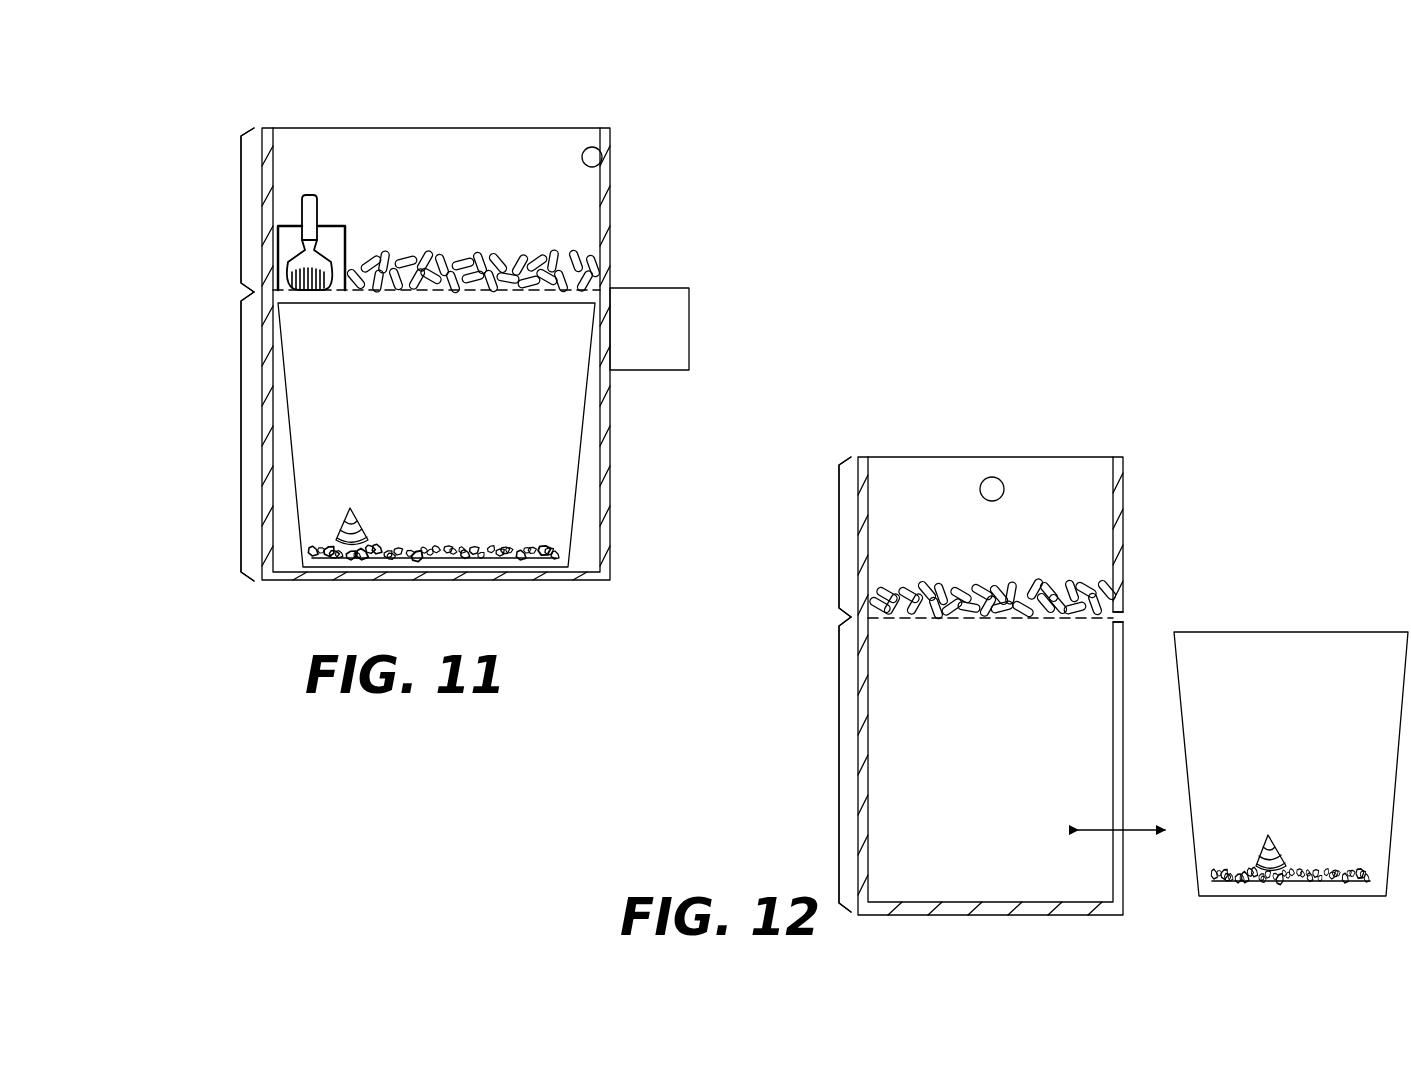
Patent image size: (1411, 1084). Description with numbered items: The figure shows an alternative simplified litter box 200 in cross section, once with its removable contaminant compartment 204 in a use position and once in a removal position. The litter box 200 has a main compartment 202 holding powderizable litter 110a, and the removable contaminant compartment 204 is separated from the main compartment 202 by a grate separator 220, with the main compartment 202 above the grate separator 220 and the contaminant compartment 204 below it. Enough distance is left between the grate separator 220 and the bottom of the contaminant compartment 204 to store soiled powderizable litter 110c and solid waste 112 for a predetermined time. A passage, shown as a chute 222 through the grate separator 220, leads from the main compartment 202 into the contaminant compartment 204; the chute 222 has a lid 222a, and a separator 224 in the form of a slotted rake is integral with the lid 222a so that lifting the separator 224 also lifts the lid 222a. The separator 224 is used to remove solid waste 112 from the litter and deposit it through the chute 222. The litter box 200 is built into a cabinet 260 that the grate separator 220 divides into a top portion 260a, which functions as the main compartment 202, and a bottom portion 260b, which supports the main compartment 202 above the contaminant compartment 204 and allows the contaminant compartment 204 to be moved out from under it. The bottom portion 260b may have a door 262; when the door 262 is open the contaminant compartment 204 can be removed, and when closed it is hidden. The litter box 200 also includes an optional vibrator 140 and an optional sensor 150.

In FIG. 11, the litter box 200 is at (469, 84).
In FIG. 12, the litter box 200 is at (916, 371).
In FIG. 11, the main compartment 202 is at (317, 128).
In FIG. 12, the main compartment 202 is at (903, 455).
In FIG. 11, the removable contaminant compartment 204 is at (580, 478).
In FIG. 12, the removable contaminant compartment 204 is at (1327, 631).
In FIG. 11, the sensor 150 is at (592, 147).
In FIG. 12, the sensor 150 is at (991, 477).
In FIG. 11, the cabinet 260 is at (603, 200).
In FIG. 12, the cabinet 260 is at (1124, 509).
In FIG. 11, the top portion 260a is at (240, 207).
In FIG. 12, the top portion 260a is at (838, 533).
In FIG. 11, the bottom portion 260b is at (240, 437).
In FIG. 12, the bottom portion 260b is at (838, 770).
In FIG. 11, the grate separator 220 is at (600, 283).
In FIG. 12, the grate separator 220 is at (1113, 605).
In FIG. 11, the chute 222 is at (347, 255).
In FIG. 11, the lid 222a is at (285, 225).
In FIG. 11, the separator 224 is at (318, 249).
In FIG. 11, the powderizable litter 110a is at (430, 256).
In FIG. 12, the powderizable litter 110a is at (1027, 581).
In FIG. 11, the soiled powderizable litter 110c is at (455, 537).
In FIG. 12, the soiled powderizable litter 110c is at (1333, 866).
In FIG. 11, the solid waste 112 is at (363, 512).
In FIG. 12, the solid waste 112 is at (1272, 836).
In FIG. 11, the vibrator 140 is at (690, 328).
In FIG. 12, the door 262 is at (1124, 641).